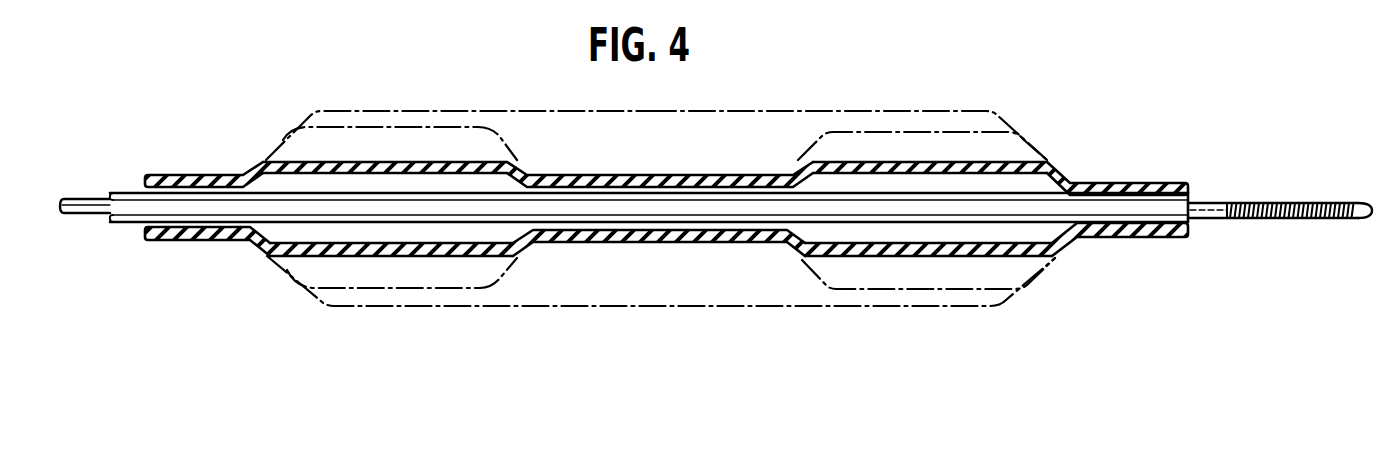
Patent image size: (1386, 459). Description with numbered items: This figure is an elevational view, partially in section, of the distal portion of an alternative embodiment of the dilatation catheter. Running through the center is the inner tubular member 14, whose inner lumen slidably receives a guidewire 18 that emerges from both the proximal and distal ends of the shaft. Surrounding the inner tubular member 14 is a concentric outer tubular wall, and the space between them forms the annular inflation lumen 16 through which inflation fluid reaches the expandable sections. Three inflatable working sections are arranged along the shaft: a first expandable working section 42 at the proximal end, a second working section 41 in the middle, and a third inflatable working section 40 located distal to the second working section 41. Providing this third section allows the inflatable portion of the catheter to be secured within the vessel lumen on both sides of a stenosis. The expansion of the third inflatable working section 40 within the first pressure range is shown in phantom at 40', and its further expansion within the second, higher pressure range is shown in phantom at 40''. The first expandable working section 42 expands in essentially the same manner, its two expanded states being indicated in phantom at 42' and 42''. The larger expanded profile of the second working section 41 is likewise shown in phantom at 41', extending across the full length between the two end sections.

The inner tubular member 14 is at (131, 200).
The annular inflation lumen 16 is at (217, 236).
The guidewire 18 is at (80, 206).
The third inflatable working section 40 is at (928, 257).
The expansion of third inflatable working section within first pressure range 40' is at (922, 120).
The expansion of third inflatable working section within second higher pressure rang 40'' is at (848, 120).
The second working section 41 is at (666, 167).
The expansion of second working section 41' is at (661, 305).
The first expandable working section 42 is at (390, 262).
The expansion of first expandable working section within first pressure range 42' is at (400, 117).
The expansion of first expandable working section within second higher pressure rang 42'' is at (458, 117).